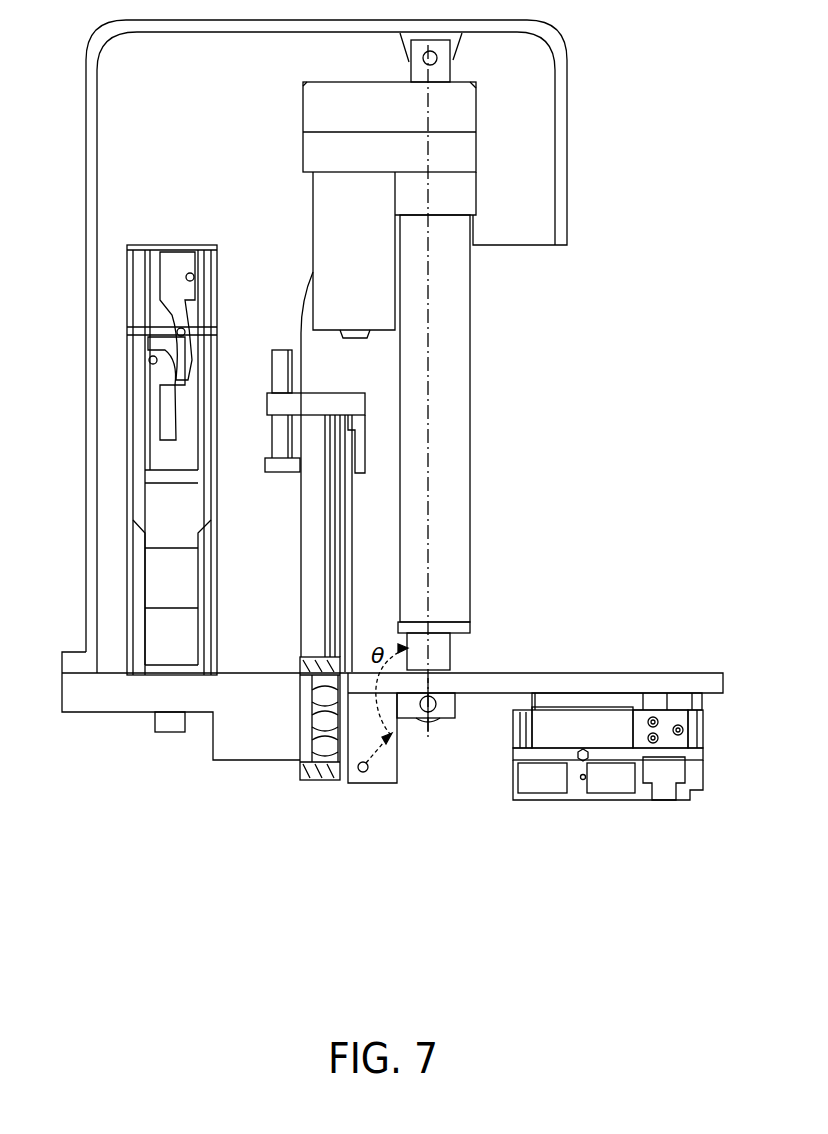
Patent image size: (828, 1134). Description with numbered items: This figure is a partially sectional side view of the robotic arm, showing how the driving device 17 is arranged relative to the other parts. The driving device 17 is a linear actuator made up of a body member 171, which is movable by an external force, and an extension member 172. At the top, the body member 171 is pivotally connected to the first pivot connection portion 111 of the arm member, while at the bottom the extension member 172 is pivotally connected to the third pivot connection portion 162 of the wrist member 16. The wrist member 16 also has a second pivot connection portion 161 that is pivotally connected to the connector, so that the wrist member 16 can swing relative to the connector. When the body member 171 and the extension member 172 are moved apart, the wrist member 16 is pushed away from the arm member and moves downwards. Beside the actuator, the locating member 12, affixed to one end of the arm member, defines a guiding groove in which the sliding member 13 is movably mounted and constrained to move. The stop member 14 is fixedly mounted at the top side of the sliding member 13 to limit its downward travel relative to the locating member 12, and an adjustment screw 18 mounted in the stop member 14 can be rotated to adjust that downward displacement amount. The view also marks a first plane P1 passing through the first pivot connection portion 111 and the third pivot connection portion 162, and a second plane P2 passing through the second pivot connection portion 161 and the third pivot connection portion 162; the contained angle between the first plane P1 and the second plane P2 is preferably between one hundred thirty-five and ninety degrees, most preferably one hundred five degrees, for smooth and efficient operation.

The first pivot connection portion 111 is at (437, 58).
The driving device 17 is at (476, 392).
The body member 171 is at (471, 532).
The extension member 172 is at (452, 653).
The first plane P1 is at (432, 398).
The stop member 14 is at (320, 393).
The adjustment screw 18 is at (272, 432).
The sliding member 13 is at (327, 538).
The locating member 12 is at (327, 712).
The third pivot connection portion 162 is at (433, 713).
The second pivot connection portion 161 is at (363, 773).
The second plane P2 is at (405, 723).
The wrist member 16 is at (615, 693).